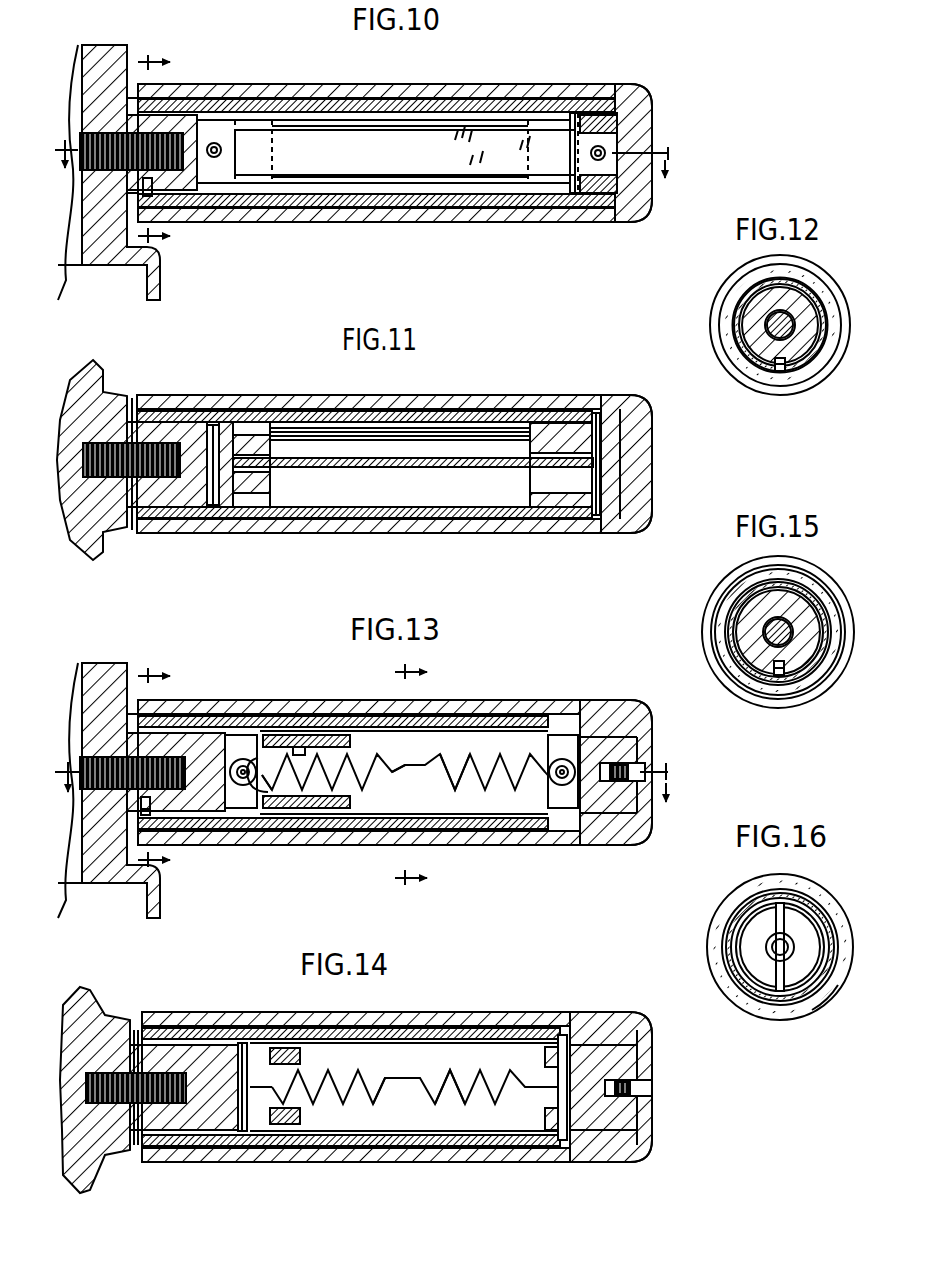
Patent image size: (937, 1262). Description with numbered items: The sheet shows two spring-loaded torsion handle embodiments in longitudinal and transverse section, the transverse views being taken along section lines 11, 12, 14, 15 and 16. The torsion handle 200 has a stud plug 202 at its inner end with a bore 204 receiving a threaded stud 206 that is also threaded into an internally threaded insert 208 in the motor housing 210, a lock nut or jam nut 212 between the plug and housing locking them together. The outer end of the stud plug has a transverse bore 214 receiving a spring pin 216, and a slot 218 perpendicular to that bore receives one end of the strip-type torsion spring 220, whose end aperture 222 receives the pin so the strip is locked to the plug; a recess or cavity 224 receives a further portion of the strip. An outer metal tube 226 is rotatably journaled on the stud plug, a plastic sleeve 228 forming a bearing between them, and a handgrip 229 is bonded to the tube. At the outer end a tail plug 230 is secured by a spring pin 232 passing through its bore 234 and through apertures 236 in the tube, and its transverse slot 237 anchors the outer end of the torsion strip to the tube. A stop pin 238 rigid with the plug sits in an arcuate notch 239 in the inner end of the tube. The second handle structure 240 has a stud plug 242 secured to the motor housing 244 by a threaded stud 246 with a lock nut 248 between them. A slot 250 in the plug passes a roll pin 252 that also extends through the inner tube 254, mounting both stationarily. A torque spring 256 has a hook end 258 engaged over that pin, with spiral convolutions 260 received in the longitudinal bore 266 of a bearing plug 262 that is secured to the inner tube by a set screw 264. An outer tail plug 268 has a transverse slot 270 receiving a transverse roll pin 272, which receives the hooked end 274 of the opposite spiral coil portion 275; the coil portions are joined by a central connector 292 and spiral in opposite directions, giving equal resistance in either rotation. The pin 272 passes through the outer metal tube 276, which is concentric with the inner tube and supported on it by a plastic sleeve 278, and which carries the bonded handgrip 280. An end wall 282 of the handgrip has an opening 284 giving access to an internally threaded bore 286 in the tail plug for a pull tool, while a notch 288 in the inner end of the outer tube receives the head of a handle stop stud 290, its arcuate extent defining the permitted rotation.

In FIG. 10, the section line 11— 11 is at (361, 159).
In FIG. 10, the section line 12— 12 is at (172, 149).
In FIG. 13, the section line 14— 14 is at (362, 782).
In FIG. 13, the section line 15— 15 is at (169, 768).
In FIG. 13, the section line 16— 16 is at (425, 775).
In FIG. 10, the spring loaded torsion handle 200 is at (455, 78).
In FIG. 11, the spring loaded torsion handle 200 is at (487, 390).
In FIG. 10, the stud plug 202 is at (200, 120).
In FIG. 11, the stud plug 202 is at (200, 430).
In FIG. 12, the stud plug 202 is at (755, 360).
In FIG. 11, the bore 204 is at (175, 445).
In FIG. 10, the threaded stud 206 is at (100, 130).
In FIG. 11, the threaded stud 206 is at (93, 465).
In FIG. 12, the threaded stud 206 is at (765, 326).
In FIG. 10, the internally threaded insert 208 is at (82, 110).
In FIG. 10, the motor housing 210 is at (130, 44).
In FIG. 11, the motor housing 210 is at (85, 377).
In FIG. 11, the lock nut or jam nut 212 is at (133, 398).
In FIG. 11, the transverse bore 214 is at (215, 505).
In FIG. 10, the spring pin or roll pin 216 is at (238, 100).
In FIG. 11, the spring pin or roll pin 216 is at (203, 518).
In FIG. 10, the slot 218 is at (270, 84).
In FIG. 10, the strip-type torsion spring 220 is at (430, 176).
In FIG. 11, the strip-type torsion spring 220 is at (430, 458).
In FIG. 10, the end aperture 222 is at (218, 162).
In FIG. 10, the recess or cavity 224 is at (270, 182).
In FIG. 11, the recess or cavity 224 is at (275, 490).
In FIG. 10, the outer metal tube 226 is at (515, 207).
In FIG. 11, the outer metal tube 226 is at (522, 418).
In FIG. 12, the outer metal tube 226 is at (722, 290).
In FIG. 10, the plastic sleeve 228 is at (497, 97).
In FIG. 11, the plastic sleeve 228 is at (317, 420).
In FIG. 11, the handgrip 229 is at (400, 535).
In FIG. 10, the tail plug 230 is at (652, 115).
In FIG. 11, the tail plug 230 is at (640, 533).
In FIG. 10, the spring pin or roll pin 232 is at (600, 162).
In FIG. 11, the spring pin or roll pin 232 is at (575, 520).
In FIG. 11, the bore 234 is at (520, 522).
In FIG. 11, the apertures 236 is at (595, 520).
In FIG. 10, the transverse slot 237 is at (585, 113).
In FIG. 11, the transverse slot 237 is at (652, 447).
In FIG. 10, the stop pin 238 is at (143, 190).
In FIG. 12, the stop pin 238 is at (779, 376).
In FIG. 12, the arcuate notch 239 is at (840, 340).
In FIG. 13, the handle structure 240 is at (505, 698).
In FIG. 14, the handle structure 240 is at (510, 1008).
In FIG. 13, the stud plug 242 is at (195, 733).
In FIG. 15, the stud plug 242 is at (758, 690).
In FIG. 14, the stud plug 242 is at (200, 1130).
In FIG. 13, the motor housing 244 is at (112, 662).
In FIG. 14, the motor housing 244 is at (77, 1190).
In FIG. 13, the threaded stud 246 is at (82, 735).
In FIG. 15, the threaded stud 246 is at (745, 648).
In FIG. 14, the threaded stud 246 is at (112, 1105).
In FIG. 14, the lock nut or jam nut 248 is at (134, 1030).
In FIG. 13, the slot 250 is at (240, 733).
In FIG. 14, the slot 250 is at (228, 1162).
In FIG. 13, the spring or roll pin 252 is at (258, 808).
In FIG. 14, the spring or roll pin 252 is at (243, 1043).
In FIG. 13, the inner tube 254 is at (570, 850).
In FIG. 15, the inner tube 254 is at (832, 682).
In FIG. 16, the inner tube 254 is at (828, 1002).
In FIG. 14, the inner tube 254 is at (190, 1030).
In FIG. 13, the torque spring 256 is at (500, 800).
In FIG. 14, the torque spring 256 is at (468, 1072).
In FIG. 13, the hook end 258 is at (252, 790).
In FIG. 13, the spiral convolutions 260 is at (388, 790).
In FIG. 14, the spiral convolutions 260 is at (366, 1105).
In FIG. 13, the bearing plug 262 is at (340, 808).
In FIG. 14, the bearing plug 262 is at (338, 1160).
In FIG. 13, the pin or set screw 264 is at (298, 733).
In FIG. 13, the longitudinal bore 266 is at (300, 845).
In FIG. 14, the longitudinal bore 266 is at (300, 1162).
In FIG. 13, the outer tail plug 268 is at (612, 750).
In FIG. 14, the outer tail plug 268 is at (605, 1162).
In FIG. 13, the transverse slot 270 is at (600, 846).
In FIG. 16, the transverse slot 270 is at (795, 910).
In FIG. 14, the transverse slot 270 is at (600, 1035).
In FIG. 13, the transverse spring pin or roll pin 272 is at (566, 758).
In FIG. 14, the transverse spring pin or roll pin 272 is at (560, 1150).
In FIG. 13, the hooked end 274 is at (548, 735).
In FIG. 13, the spiral coil portion 275 is at (530, 845).
In FIG. 16, the spiral coil portion 275 is at (738, 996).
In FIG. 13, the outer metal tube 276 is at (470, 716).
In FIG. 15, the outer metal tube 276 is at (715, 612).
In FIG. 16, the outer metal tube 276 is at (724, 914).
In FIG. 14, the outer metal tube 276 is at (548, 1032).
In FIG. 13, the plastic sleeve 278 is at (445, 716).
In FIG. 16, the plastic sleeve 278 is at (764, 1010).
In FIG. 13, the handgrip 280 is at (338, 700).
In FIG. 15, the handgrip 280 is at (722, 668).
In FIG. 16, the handgrip 280 is at (716, 967).
In FIG. 14, the handgrip 280 is at (400, 1020).
In FIG. 13, the end wall 282 is at (650, 815).
In FIG. 14, the end wall 282 is at (650, 1125).
In FIG. 13, the opening 284 is at (622, 772).
In FIG. 14, the opening 284 is at (640, 1092).
In FIG. 14, the internally threaded bore 286 is at (645, 1088).
In FIG. 13, the notch 288 is at (210, 845).
In FIG. 15, the notch 288 is at (728, 634).
In FIG. 13, the handle stop stud 290 is at (141, 810).
In FIG. 15, the handle stop stud 290 is at (786, 690).
In FIG. 13, the connector 292 is at (468, 845).
In FIG. 16, the connector 292 is at (768, 951).
In FIG. 14, the connector 292 is at (405, 1110).